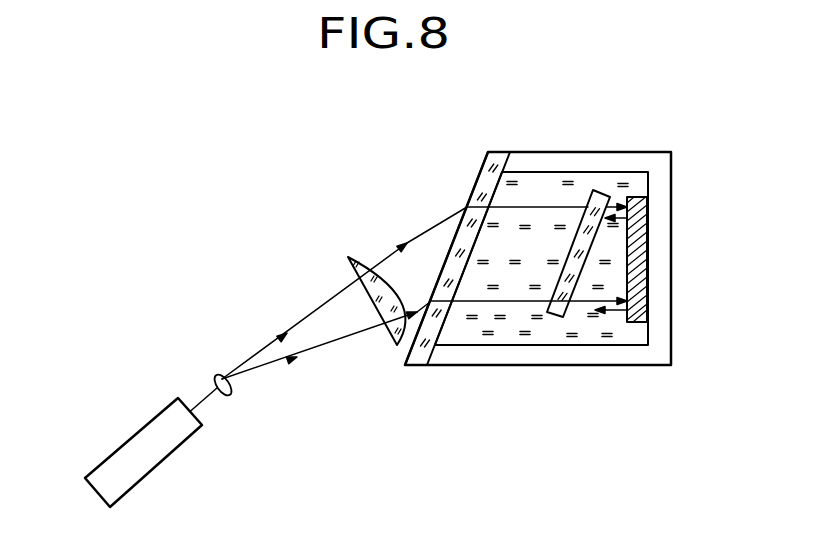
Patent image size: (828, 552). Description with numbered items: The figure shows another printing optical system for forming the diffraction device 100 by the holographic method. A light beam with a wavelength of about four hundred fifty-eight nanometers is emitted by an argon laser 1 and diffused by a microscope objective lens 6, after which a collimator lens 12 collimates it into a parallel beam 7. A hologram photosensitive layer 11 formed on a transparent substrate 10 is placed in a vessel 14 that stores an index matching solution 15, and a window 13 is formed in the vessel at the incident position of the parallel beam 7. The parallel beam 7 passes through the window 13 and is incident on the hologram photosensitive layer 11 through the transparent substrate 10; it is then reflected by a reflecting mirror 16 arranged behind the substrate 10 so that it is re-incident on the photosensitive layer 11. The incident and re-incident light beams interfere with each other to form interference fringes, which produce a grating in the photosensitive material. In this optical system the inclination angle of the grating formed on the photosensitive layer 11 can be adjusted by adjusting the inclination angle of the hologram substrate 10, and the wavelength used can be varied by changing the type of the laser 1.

The argon laser 1 is at (150, 453).
The microscope objective lens 6 is at (224, 394).
The collimator lens 12 is at (390, 333).
The window 13 is at (478, 180).
The vessel 14 is at (578, 155).
The index matching solution 15 is at (523, 180).
The reflecting mirror 16 is at (645, 195).
The parallel beam 7 is at (543, 207).
The transparent substrate 10 is at (553, 316).
The hologram photosensitive layer 11 is at (563, 317).
The diffraction device 100 is at (566, 329).